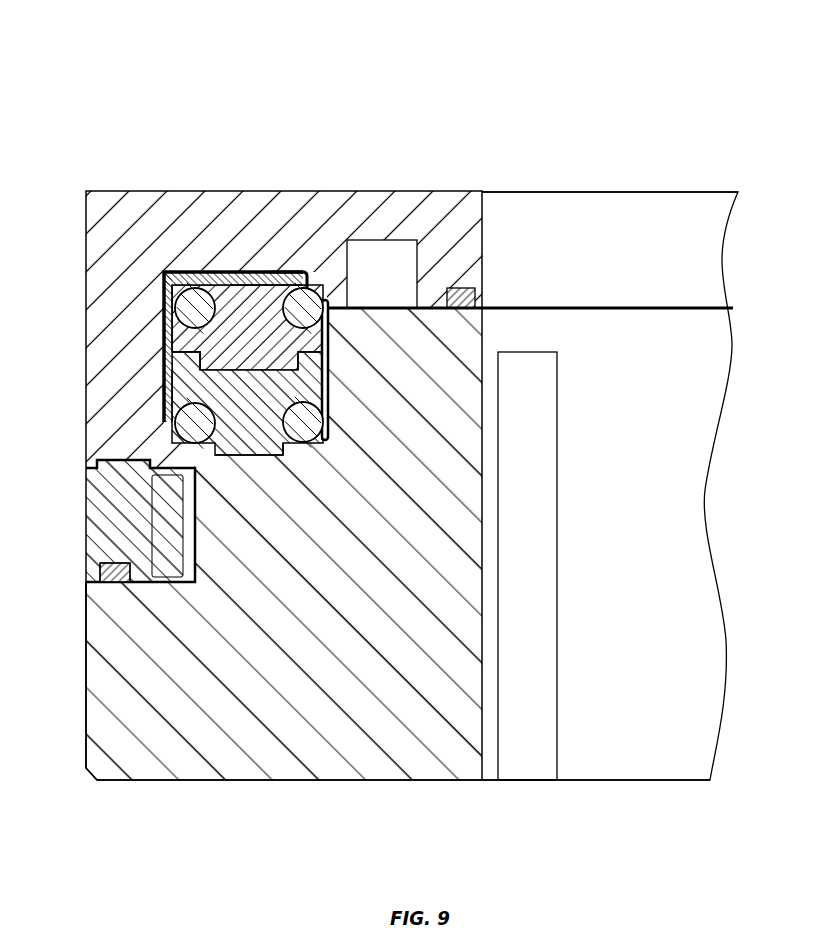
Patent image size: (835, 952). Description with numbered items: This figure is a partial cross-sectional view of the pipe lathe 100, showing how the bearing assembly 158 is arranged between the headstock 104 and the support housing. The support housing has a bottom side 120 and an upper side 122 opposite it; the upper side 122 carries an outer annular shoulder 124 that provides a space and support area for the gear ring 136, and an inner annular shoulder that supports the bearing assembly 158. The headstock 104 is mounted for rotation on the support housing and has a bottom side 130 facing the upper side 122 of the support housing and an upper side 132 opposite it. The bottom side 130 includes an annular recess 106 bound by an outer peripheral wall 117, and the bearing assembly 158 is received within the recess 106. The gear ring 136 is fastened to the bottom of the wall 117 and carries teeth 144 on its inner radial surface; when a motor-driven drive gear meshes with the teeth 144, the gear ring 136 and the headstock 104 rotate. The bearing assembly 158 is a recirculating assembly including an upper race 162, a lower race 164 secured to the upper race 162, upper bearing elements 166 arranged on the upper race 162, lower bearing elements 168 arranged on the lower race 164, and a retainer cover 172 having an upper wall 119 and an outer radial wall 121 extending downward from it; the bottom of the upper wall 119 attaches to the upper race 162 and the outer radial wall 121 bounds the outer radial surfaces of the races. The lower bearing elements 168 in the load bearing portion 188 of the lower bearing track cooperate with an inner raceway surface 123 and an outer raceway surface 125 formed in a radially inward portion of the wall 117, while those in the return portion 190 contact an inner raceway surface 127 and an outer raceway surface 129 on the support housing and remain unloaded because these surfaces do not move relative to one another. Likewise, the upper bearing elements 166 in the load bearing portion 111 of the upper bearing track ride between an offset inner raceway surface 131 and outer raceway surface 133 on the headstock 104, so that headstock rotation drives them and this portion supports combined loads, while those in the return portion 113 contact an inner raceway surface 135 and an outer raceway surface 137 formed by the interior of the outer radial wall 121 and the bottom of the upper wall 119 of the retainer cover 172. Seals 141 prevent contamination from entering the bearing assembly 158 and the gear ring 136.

The pipe lathe 100 is at (583, 62).
The headstock 104 is at (633, 220).
The annular recess 106 is at (228, 284).
The load bearing portion 111 is at (303, 285).
The return portion 113 is at (168, 335).
The outer peripheral wall 117 is at (103, 377).
The upper wall 119 is at (277, 283).
The bottom side 120 is at (591, 780).
The outer radial wall 121 is at (167, 341).
The upper side 122 is at (680, 322).
The inner raceway surface 123 is at (165, 381).
The outer annular shoulder 124 is at (188, 546).
The outer raceway surface 125 is at (218, 456).
The inner raceway surface 127 is at (305, 392).
The outer raceway surface 129 is at (303, 427).
The bottom side 130 is at (680, 300).
The inner raceway surface 131 is at (328, 290).
The upper side 132 is at (562, 192).
The outer raceway surface 133 is at (352, 306).
The inner raceway surface 135 is at (214, 285).
The gear ring 136 is at (112, 548).
The outer raceway surface 137 is at (163, 327).
The seals 141 is at (485, 300).
The teeth 144 is at (204, 460).
The bearing assembly 158 is at (330, 372).
The upper race 162 is at (244, 300).
The lower race 164 is at (253, 454).
The upper bearing elements 166 is at (190, 280).
The lower bearing elements 168 is at (173, 417).
The bearing retainer cover 172 is at (161, 281).
The load bearing portion 188 is at (87, 697).
The return portion 190 is at (288, 445).